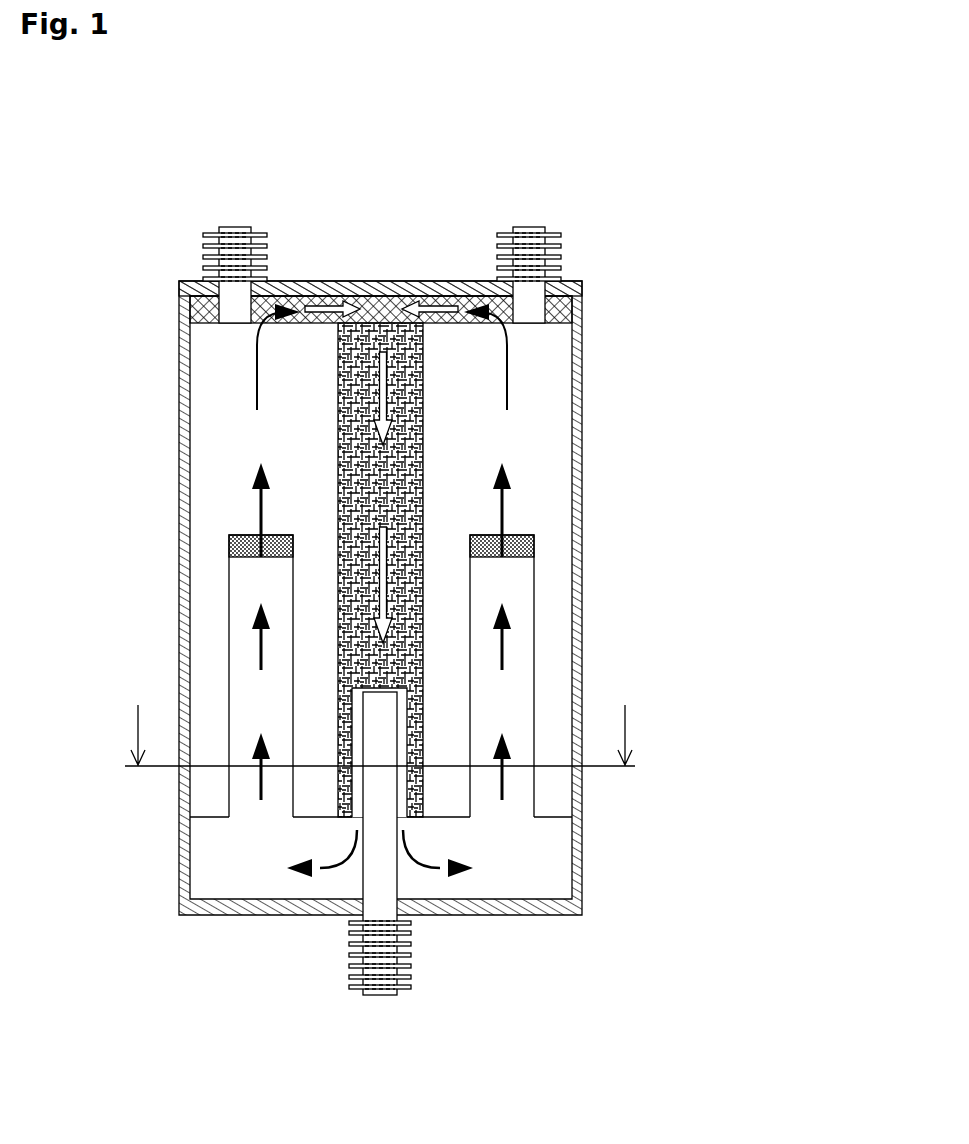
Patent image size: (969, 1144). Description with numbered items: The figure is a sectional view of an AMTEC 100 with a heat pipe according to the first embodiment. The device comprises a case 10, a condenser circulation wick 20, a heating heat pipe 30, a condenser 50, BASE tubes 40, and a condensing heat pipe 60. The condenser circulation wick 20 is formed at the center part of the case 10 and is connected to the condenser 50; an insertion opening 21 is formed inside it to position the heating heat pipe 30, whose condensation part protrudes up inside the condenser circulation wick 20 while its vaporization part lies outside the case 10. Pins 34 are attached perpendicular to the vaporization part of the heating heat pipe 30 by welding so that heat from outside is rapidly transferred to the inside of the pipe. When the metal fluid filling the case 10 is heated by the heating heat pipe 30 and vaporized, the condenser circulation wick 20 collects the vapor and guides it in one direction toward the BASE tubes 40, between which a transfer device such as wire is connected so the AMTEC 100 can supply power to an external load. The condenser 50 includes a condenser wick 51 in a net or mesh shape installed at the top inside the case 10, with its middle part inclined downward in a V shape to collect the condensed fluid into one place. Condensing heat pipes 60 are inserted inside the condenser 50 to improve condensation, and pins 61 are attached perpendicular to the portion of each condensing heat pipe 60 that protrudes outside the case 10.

The AMTEC 100 is at (705, 300).
The case 10 is at (582, 407).
The condenser circulation wick 20 is at (340, 637).
The insertion opening 21 is at (360, 803).
The heating heat pipe 30 is at (388, 875).
The pins 34 is at (408, 989).
The BASE tube 40 is at (237, 542).
The condenser 50 is at (402, 275).
The condenser wick 51 is at (365, 283).
The condensing heat pipe 60 is at (558, 266).
The pins 61 is at (220, 236).